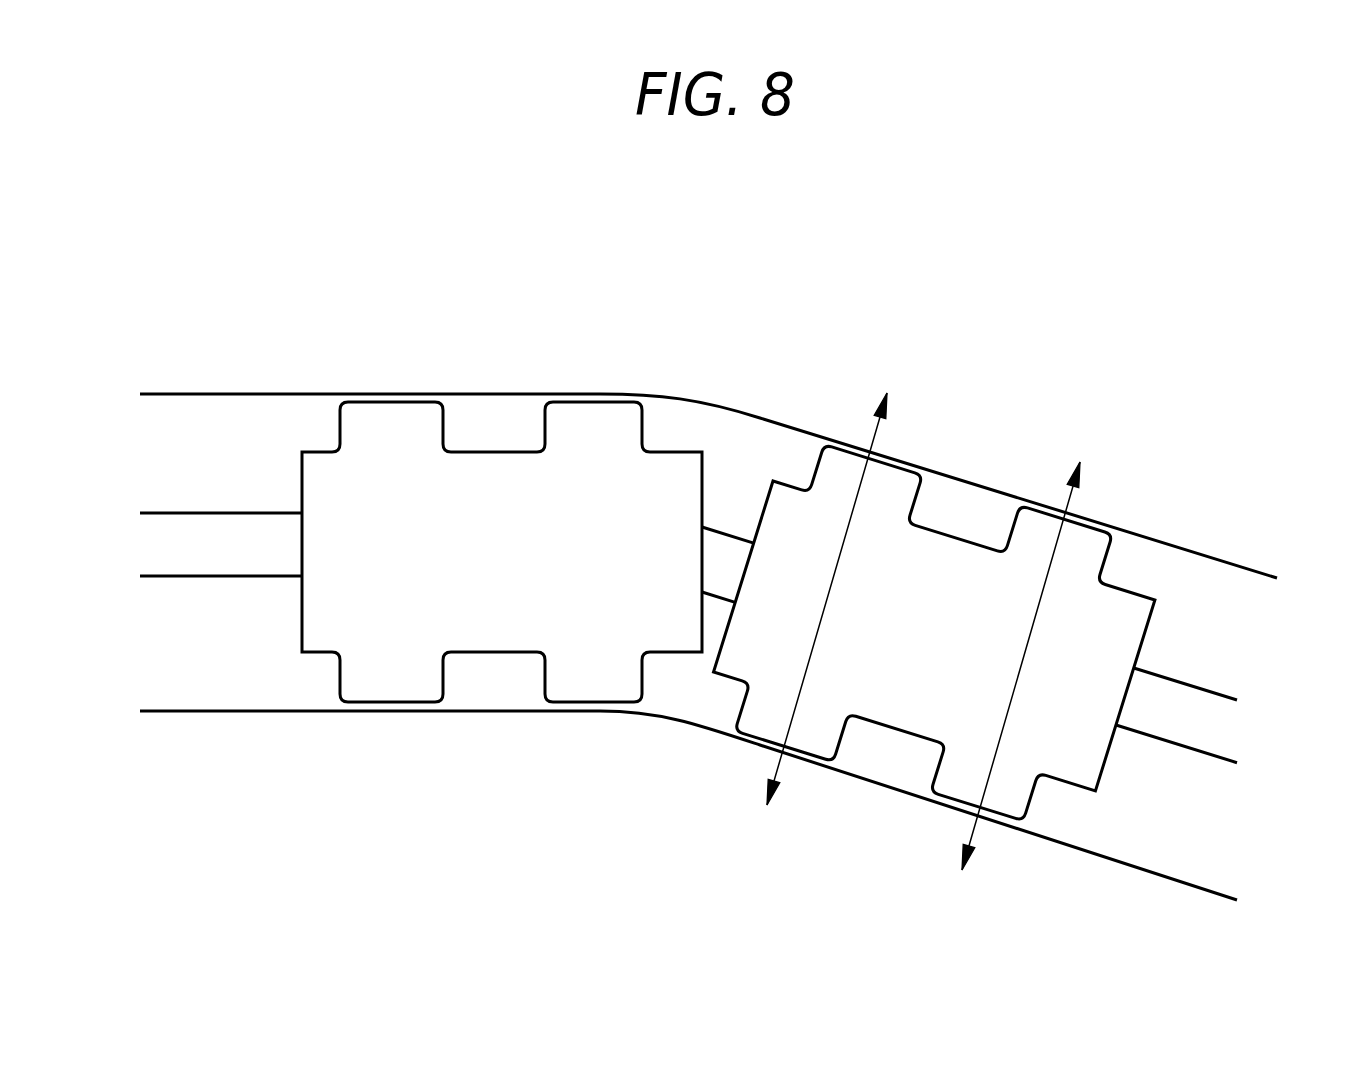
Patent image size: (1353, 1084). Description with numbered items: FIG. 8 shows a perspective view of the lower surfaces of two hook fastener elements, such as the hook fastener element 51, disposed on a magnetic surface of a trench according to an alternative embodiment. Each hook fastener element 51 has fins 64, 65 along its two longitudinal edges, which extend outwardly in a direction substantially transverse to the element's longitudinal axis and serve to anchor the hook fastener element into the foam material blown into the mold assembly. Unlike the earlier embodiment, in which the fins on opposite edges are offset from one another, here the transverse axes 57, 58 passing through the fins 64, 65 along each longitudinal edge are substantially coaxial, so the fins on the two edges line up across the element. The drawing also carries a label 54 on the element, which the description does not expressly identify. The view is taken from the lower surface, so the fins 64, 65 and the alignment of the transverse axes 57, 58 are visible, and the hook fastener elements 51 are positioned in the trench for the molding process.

The hook fastener element 51 is at (647, 382).
The semiconductor package body 54 is at (667, 497).
The transverse axis 57 is at (872, 430).
The transverse axis 58 is at (778, 766).
The fin 64 is at (897, 495).
The fin 65 is at (835, 712).